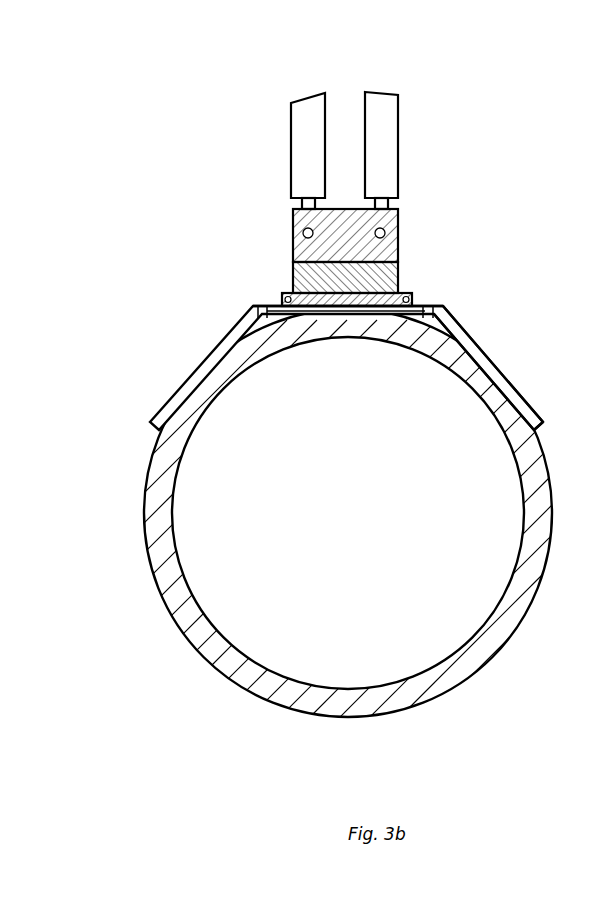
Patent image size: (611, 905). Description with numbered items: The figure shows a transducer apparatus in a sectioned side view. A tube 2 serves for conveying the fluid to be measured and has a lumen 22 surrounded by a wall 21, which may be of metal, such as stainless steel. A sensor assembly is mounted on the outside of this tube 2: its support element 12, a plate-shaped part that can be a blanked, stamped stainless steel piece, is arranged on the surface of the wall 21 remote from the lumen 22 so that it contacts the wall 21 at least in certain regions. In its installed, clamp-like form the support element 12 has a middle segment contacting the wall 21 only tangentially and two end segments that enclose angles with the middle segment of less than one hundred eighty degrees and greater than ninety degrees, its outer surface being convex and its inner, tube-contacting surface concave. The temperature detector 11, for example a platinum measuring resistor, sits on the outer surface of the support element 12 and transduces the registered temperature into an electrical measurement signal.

The tube 2 is at (333, 513).
The wall 21 is at (180, 605).
The lumen 22 is at (298, 652).
The temperature detector 11 is at (323, 272).
The support element 12 is at (335, 514).